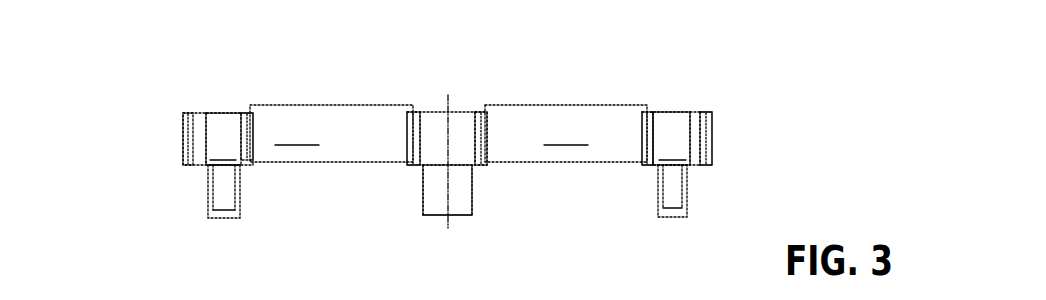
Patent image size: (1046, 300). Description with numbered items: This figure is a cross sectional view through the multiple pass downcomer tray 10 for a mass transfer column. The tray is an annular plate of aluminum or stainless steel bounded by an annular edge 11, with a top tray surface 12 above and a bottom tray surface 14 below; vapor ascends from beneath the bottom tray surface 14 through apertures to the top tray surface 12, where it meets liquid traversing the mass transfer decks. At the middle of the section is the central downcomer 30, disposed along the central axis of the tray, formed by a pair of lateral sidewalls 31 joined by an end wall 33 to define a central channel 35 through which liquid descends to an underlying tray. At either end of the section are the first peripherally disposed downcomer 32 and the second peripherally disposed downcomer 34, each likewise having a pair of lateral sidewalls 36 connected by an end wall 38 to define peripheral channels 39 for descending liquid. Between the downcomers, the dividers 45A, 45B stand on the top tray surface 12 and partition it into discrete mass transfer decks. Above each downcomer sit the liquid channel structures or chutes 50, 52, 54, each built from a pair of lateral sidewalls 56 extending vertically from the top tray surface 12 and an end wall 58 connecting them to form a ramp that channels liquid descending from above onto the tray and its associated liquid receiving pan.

The multiple pass downcomer tray 10 is at (80, 66).
The annular edge 11 is at (713, 165).
The top tray surface 12 is at (586, 144).
The bottom tray surface 14 is at (564, 176).
The central downcomer 30 is at (453, 202).
The lateral sidewalls 31 is at (430, 200).
The first peripherally disposed downcomer 32 is at (680, 202).
The end wall 33 is at (438, 217).
The second peripherally disposed downcomer 34 is at (225, 200).
The central channel 35 is at (440, 182).
The lateral sidewalls 36 is at (208, 197).
The end wall 38 is at (218, 208).
The peripheral channels 39 is at (222, 180).
The divider 45A is at (566, 134).
The divider 45B is at (297, 134).
The liquid channel structure or chute 50 is at (465, 132).
The liquid channel structure or chute 52 is at (690, 138).
The liquid channel structure or chute 54 is at (222, 132).
The lateral sidewalls 56 is at (185, 137).
The end wall 58 is at (438, 143).